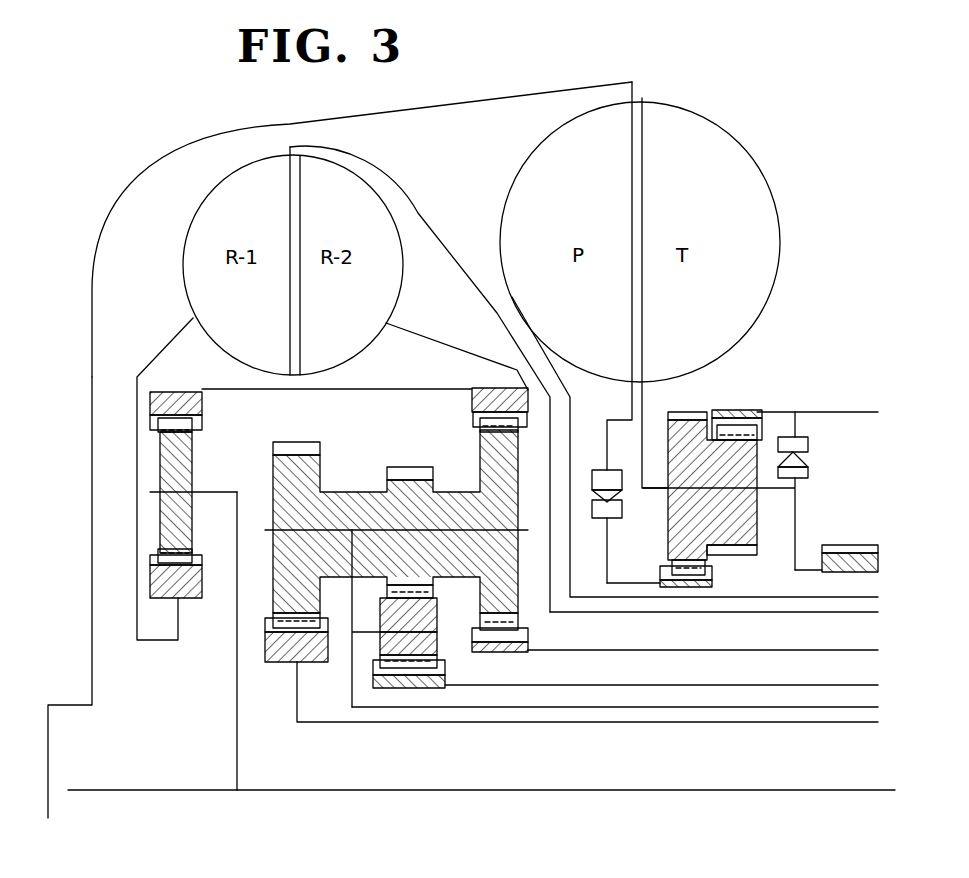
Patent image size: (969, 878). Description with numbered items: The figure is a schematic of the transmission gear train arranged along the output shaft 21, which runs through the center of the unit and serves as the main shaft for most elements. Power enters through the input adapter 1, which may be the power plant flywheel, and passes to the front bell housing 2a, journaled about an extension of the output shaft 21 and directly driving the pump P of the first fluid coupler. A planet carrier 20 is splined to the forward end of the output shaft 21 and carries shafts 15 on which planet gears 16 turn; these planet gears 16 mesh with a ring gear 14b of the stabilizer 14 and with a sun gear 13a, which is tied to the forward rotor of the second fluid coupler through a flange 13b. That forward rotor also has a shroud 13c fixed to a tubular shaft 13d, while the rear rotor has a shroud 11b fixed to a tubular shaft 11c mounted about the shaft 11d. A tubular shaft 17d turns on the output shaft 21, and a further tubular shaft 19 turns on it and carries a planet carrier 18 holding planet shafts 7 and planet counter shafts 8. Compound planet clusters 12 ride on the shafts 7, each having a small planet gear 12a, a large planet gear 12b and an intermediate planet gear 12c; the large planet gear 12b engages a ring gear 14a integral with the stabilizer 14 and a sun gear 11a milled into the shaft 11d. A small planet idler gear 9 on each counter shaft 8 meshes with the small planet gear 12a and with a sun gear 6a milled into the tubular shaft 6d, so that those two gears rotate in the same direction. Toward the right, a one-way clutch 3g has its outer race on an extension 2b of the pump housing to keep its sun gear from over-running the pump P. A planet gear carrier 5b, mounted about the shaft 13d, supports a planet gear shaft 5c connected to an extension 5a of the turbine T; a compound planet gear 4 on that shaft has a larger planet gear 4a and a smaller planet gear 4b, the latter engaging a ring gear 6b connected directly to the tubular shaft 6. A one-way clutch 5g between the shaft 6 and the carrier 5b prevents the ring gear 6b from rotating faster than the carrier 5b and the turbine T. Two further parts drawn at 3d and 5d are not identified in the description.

The input adapter 1 is at (72, 700).
The front bell housing 2a is at (183, 170).
The extension from pump housing 2b is at (607, 428).
The bearing 3d is at (712, 580).
The one-way clutch 3g is at (622, 508).
The compound planet gear 4 is at (718, 474).
The larger planet gear 4a is at (706, 392).
The smaller planet gear 4b is at (748, 550).
The extension from turbine 5a is at (645, 395).
The planet gear carrier 5b is at (800, 570).
The planet gear shaft 5c is at (778, 490).
The terminal block 5d is at (860, 545).
The one-way clutch 5g is at (803, 437).
The tubular shaft 6 is at (838, 402).
The sun gear 6a is at (446, 682).
The ring gear 6b is at (736, 410).
The tubular shaft 6d is at (645, 685).
The planet shafts 7 is at (266, 528).
The planet counter shafts 8 is at (458, 628).
The small planet idler gear 9 is at (430, 613).
The sun gear 11a is at (530, 640).
The shroud 11b is at (462, 337).
The tubular shaft 11c is at (797, 613).
The tubular shaft 11d is at (712, 648).
The compound planet clusters 12 is at (373, 474).
The small planet gear 12a is at (430, 450).
The large planet gear 12b is at (480, 440).
The intermediate planet gear 12c is at (305, 422).
The sun gear 13a is at (195, 598).
The flange 13b is at (162, 352).
The shroud 13c is at (418, 215).
The tubular shaft 13d is at (880, 600).
The stabilizer 14 is at (401, 388).
The ring gear 14a is at (490, 395).
The ring gear 14b is at (177, 395).
The shafts 15 is at (216, 495).
The planet gears 16 is at (188, 470).
The tubular shaft 17d is at (458, 724).
The planet carrier 18 is at (351, 666).
The tubular shaft 19 is at (578, 710).
The planet carrier 20 is at (236, 650).
The output shaft 21 is at (765, 788).